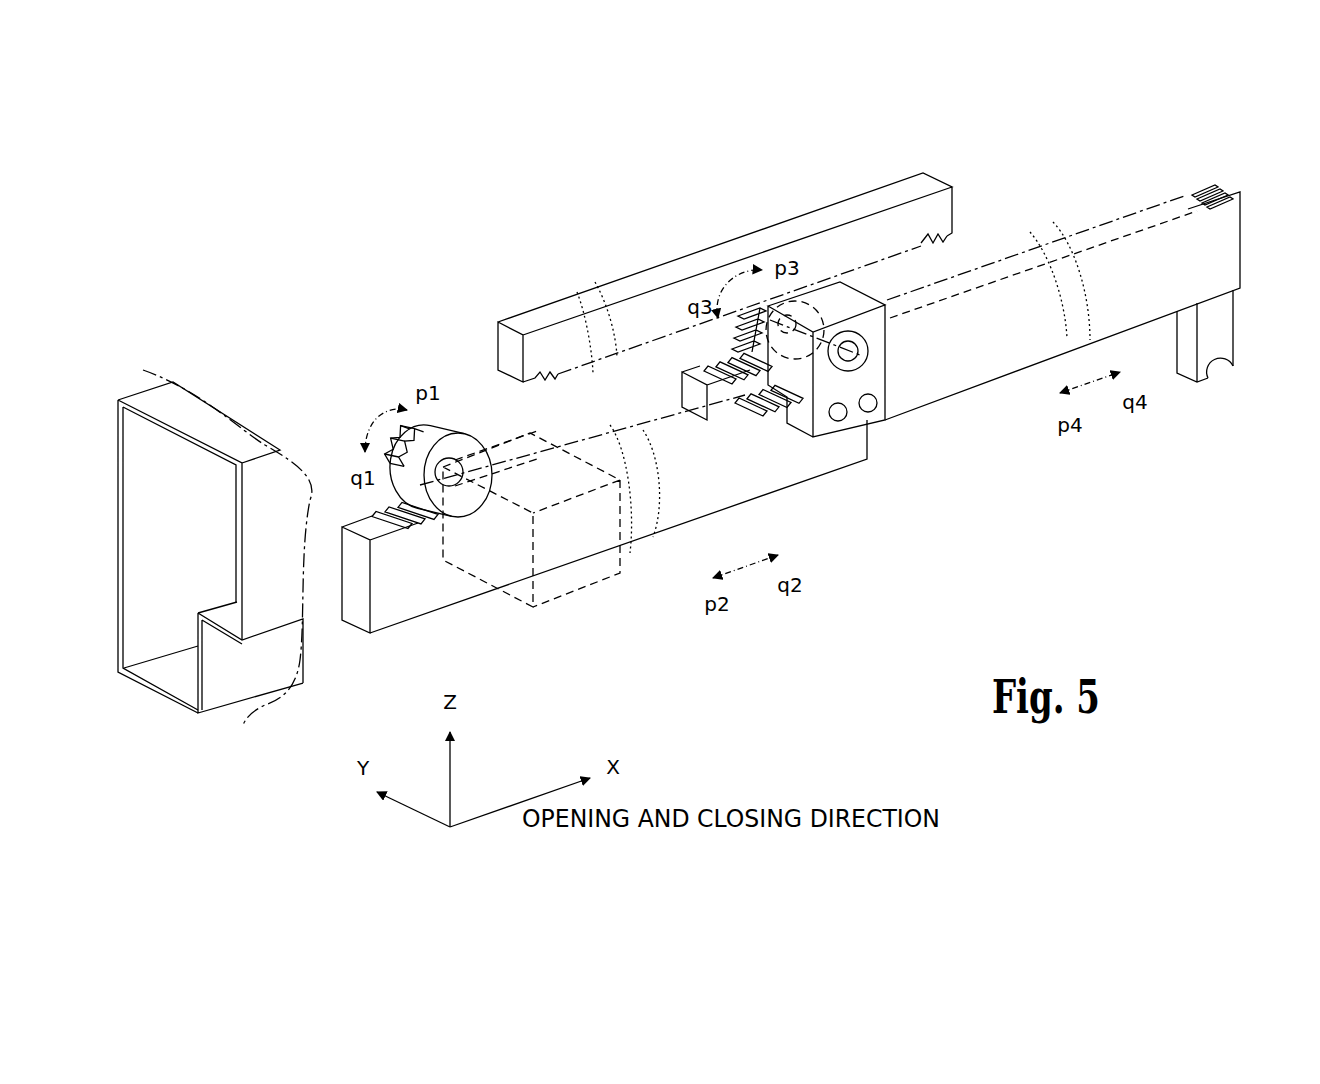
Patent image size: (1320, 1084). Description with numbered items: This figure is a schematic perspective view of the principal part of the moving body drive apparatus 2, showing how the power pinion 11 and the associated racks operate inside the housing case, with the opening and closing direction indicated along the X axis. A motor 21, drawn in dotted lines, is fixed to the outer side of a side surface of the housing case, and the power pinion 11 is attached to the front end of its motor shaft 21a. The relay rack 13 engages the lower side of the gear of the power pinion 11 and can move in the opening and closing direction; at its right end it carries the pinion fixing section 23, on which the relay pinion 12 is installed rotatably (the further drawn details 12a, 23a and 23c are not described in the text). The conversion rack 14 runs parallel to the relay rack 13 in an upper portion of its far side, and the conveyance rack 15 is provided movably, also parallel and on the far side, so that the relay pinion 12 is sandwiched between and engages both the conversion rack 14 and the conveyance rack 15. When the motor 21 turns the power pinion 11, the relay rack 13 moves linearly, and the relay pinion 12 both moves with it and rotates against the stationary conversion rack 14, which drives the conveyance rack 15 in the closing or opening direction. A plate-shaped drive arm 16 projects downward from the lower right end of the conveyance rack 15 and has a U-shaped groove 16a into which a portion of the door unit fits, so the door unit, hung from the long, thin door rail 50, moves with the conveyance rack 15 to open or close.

The moving body drive apparatus 2 is at (547, 245).
The power pinion 11 is at (462, 443).
The relay pinion 12 is at (742, 337).
The shaft of second gear 12a is at (856, 354).
The relay rack 13 is at (400, 610).
The conversion rack 14 is at (512, 355).
The conveyance rack 15 is at (1225, 265).
The drive arm 16 is at (1222, 340).
The U-shaped groove 16a is at (1222, 360).
The motor 21 is at (562, 583).
The motor shaft 21a is at (477, 473).
The pinion fixing section 23 is at (877, 382).
The bearing of gear block 23a is at (866, 343).
The mounting holes 23c is at (838, 420).
The door rail 50 is at (220, 680).